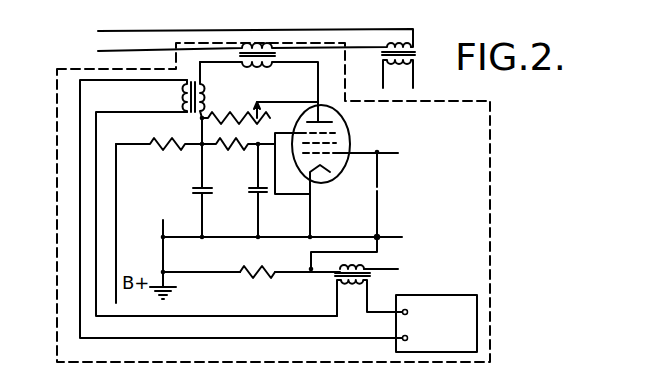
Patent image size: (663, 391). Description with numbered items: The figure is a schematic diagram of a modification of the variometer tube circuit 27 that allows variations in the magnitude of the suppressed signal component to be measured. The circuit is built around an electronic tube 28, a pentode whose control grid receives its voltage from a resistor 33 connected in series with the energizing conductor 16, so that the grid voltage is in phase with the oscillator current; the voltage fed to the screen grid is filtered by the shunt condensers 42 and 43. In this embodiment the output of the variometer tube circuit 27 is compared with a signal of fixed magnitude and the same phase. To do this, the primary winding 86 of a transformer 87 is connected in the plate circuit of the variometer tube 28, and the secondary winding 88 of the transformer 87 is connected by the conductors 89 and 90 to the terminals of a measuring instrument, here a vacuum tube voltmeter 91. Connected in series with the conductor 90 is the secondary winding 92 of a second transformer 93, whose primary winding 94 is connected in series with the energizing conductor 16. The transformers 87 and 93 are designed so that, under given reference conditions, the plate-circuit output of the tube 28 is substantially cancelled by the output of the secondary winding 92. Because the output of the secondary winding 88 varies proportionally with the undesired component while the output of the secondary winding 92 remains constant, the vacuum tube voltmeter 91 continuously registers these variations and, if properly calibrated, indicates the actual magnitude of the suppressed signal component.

The energizing conductor 16 is at (217, 274).
The variometer tube circuit 27 is at (491, 151).
The electronic tube 28 is at (354, 118).
The resistor 33 is at (257, 287).
The shunt condenser 42 is at (193, 191).
The shunt condenser 43 is at (253, 193).
The primary winding 86 is at (206, 95).
The transformer 87 is at (192, 117).
The secondary winding 88 is at (184, 97).
The conductor 89 is at (80, 197).
The conductor 90 is at (98, 178).
The vacuum tube voltmeter 91 is at (459, 344).
The secondary winding 92 is at (339, 283).
The transformer 93 is at (372, 275).
The primary winding 94 is at (350, 266).